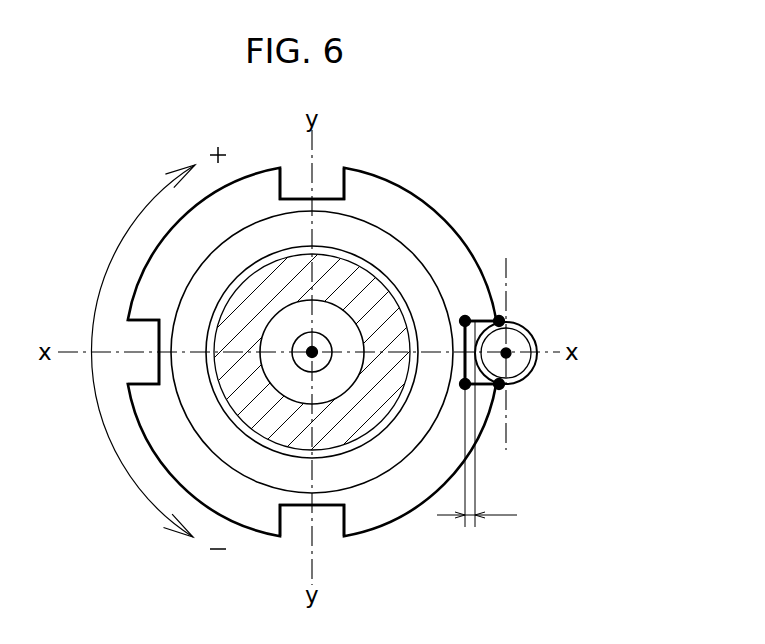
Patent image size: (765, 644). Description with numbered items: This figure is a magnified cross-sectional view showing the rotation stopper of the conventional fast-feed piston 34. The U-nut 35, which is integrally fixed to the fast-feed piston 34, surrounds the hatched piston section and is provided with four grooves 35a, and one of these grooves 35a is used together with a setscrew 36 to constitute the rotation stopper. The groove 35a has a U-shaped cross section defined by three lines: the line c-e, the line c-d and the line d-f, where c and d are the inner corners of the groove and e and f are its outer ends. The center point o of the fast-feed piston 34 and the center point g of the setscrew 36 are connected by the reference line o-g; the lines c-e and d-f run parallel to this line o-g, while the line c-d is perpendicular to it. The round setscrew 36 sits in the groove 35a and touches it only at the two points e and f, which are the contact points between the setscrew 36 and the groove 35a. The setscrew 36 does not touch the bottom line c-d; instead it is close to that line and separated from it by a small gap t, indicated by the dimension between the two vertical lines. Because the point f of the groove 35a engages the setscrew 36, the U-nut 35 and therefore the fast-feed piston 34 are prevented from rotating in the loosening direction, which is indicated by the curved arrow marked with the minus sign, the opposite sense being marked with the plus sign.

The fast-feed piston 34 is at (372, 398).
The U-nut 35 is at (391, 183).
The groove 35a is at (283, 182).
The setscrew 36 is at (516, 383).
The center point of the fast-feed piston o is at (317, 346).
The point c is at (465, 321).
The point d is at (465, 384).
The point e is at (499, 321).
The point f is at (499, 384).
The center point of the setscrew g is at (512, 366).
The gap t is at (477, 423).